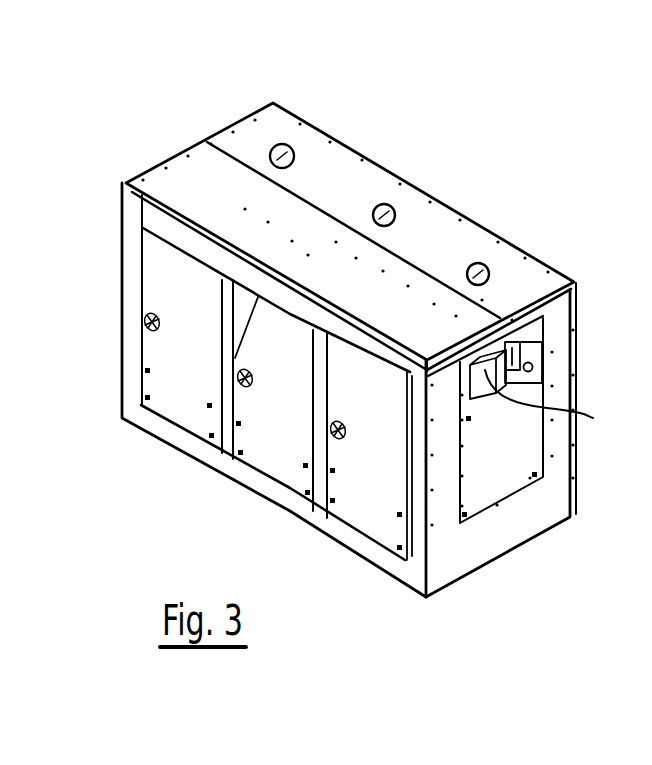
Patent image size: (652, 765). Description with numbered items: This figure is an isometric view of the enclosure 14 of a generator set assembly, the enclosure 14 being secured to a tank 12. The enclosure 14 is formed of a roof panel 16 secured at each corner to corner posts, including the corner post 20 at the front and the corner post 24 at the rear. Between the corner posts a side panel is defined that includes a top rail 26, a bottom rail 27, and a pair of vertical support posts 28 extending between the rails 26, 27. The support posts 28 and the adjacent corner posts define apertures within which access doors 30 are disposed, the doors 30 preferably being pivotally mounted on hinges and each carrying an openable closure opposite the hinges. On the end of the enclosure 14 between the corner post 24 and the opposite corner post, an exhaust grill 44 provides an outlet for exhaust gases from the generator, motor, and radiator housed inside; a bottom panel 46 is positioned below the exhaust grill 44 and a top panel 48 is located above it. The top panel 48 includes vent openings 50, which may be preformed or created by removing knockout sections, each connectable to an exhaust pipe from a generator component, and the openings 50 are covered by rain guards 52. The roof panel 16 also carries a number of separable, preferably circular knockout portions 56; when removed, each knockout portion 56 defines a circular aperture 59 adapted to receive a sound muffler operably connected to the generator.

The tank 12 is at (437, 587).
The enclosure 14 is at (362, 560).
The roof panel 16 is at (353, 147).
The corner post 20 is at (130, 321).
The corner post 24 is at (573, 472).
The top rail 26 is at (222, 388).
The bottom rail 27 is at (345, 527).
The vertical support post 28 is at (230, 305).
The access door 30 is at (295, 315).
The exhaust grill 44 is at (507, 493).
The bottom panel 46 is at (505, 547).
The top panel 48 is at (542, 357).
The vent opening 50 is at (478, 372).
The rain guard 52 is at (540, 342).
The knockout portion 56 is at (288, 147).
The circular aperture 59 is at (283, 143).